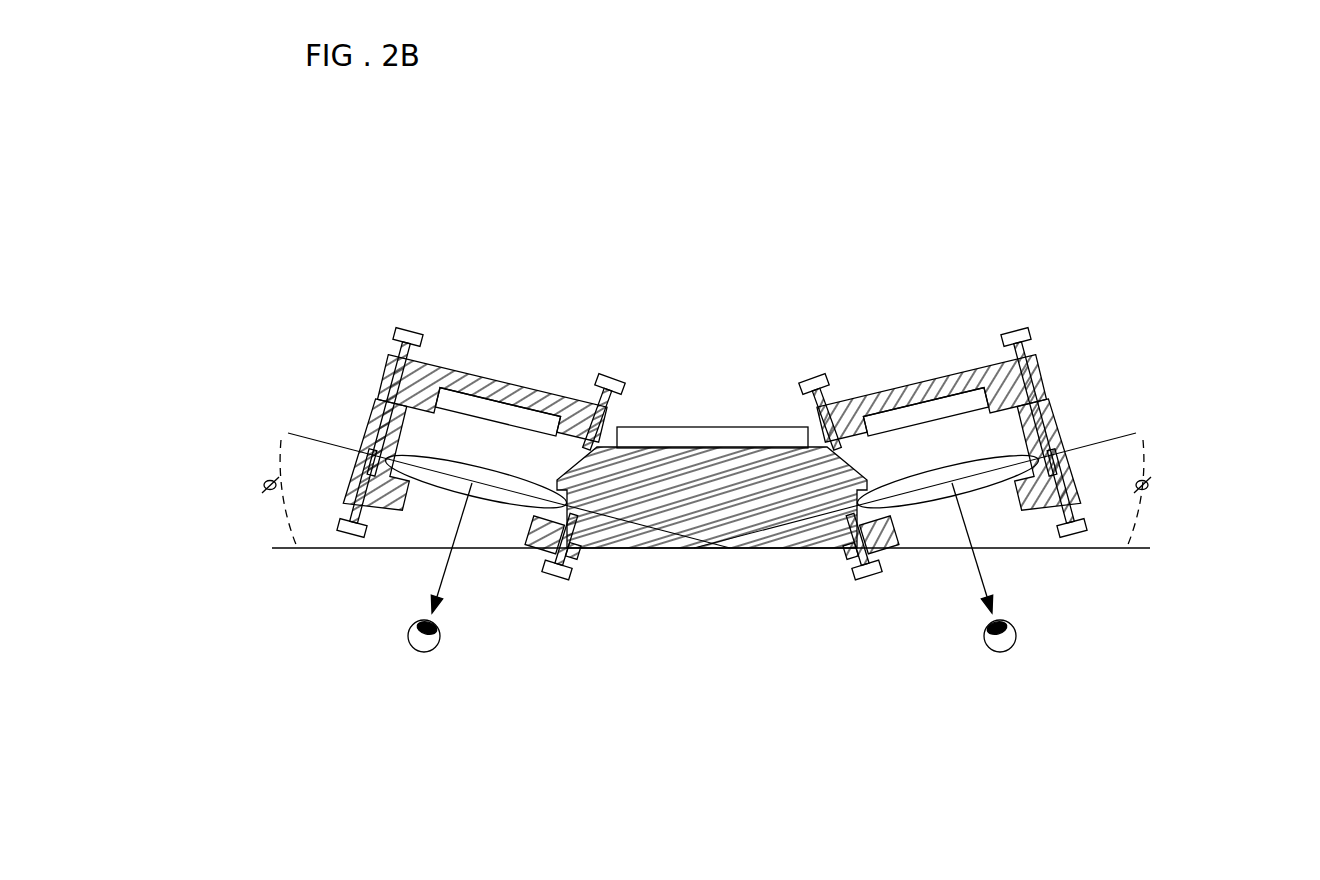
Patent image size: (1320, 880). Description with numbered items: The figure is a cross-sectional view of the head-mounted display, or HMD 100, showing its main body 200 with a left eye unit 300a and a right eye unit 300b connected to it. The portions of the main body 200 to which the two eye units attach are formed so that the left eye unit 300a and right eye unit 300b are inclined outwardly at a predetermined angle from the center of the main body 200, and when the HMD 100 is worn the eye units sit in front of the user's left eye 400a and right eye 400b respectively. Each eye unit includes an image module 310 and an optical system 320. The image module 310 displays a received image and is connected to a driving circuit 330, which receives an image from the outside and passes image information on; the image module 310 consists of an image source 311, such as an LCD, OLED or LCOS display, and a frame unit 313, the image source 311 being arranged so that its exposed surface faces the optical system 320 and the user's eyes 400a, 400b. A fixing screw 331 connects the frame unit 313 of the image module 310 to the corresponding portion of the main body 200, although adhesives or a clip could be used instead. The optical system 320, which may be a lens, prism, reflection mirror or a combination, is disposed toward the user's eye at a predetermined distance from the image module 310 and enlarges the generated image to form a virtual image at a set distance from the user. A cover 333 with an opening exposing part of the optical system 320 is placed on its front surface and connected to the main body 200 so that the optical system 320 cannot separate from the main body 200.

The HMD 100 is at (995, 238).
The main body 200 is at (812, 535).
The left eye unit 300a is at (193, 318).
The right eye unit 300b is at (1231, 318).
The image module 310 is at (268, 316).
The image source 311 is at (483, 422).
The frame unit 313 is at (398, 358).
The optical system 320 is at (432, 464).
The driving circuit 330 is at (720, 432).
The fixing screw 331 is at (418, 328).
The cover 333 is at (386, 515).
The left eye 400a is at (408, 674).
The right eye 400b is at (1012, 674).